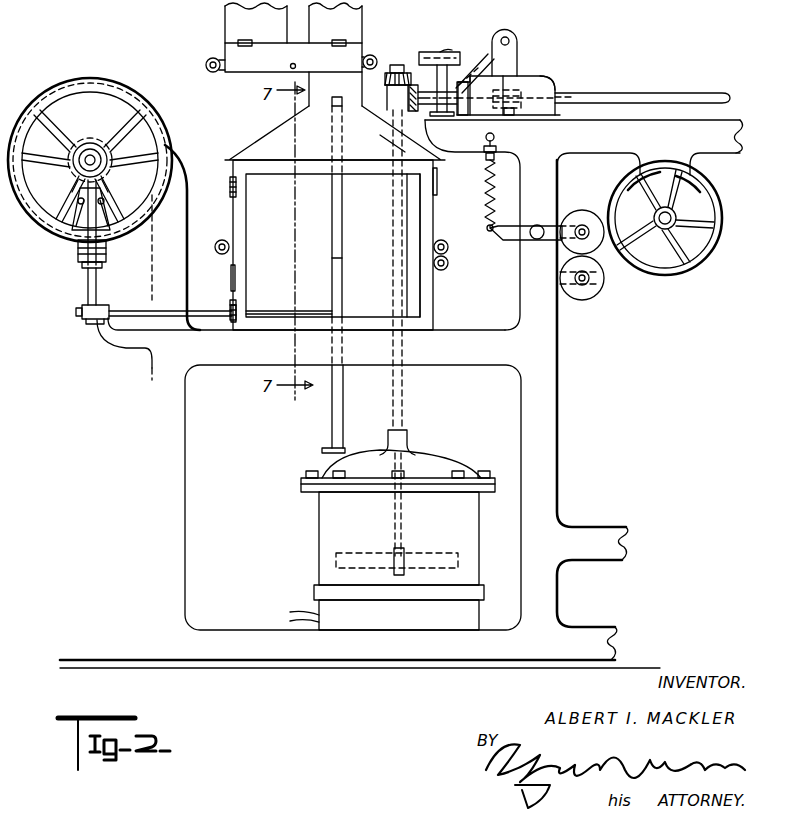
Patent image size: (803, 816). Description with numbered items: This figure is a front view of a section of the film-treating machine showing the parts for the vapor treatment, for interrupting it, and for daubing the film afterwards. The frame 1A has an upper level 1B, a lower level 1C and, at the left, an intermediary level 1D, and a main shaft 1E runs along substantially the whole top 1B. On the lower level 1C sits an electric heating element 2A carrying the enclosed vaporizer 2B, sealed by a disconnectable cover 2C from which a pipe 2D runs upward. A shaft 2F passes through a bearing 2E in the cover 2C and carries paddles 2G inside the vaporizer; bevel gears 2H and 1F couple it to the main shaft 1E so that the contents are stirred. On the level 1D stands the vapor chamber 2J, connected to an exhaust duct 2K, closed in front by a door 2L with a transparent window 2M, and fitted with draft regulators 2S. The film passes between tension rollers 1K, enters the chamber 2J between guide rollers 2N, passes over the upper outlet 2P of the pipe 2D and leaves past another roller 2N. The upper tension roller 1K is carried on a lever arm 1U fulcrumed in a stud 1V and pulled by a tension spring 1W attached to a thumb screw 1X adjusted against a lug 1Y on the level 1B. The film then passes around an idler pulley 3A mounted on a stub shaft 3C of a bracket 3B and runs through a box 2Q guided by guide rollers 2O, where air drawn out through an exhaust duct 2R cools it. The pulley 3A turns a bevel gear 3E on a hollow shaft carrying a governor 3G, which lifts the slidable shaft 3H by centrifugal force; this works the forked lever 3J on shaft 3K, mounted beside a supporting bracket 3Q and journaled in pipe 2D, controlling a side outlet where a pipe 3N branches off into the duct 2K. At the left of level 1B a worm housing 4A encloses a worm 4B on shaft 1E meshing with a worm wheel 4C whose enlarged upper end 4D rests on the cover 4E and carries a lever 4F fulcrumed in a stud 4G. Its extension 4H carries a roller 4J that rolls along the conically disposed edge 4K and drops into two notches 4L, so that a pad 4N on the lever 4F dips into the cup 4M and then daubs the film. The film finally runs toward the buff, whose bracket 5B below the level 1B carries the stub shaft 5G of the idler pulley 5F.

The frame 1A is at (406, 410).
The upper level 1B is at (584, 225).
The lower level 1C is at (360, 651).
The intermediary level 1D is at (306, 338).
The main shaft 1E is at (630, 96).
The bevel gear 1F is at (401, 133).
The tension rollers 1K is at (584, 208).
The lever arm 1U is at (512, 241).
The stud 1V is at (531, 227).
The tension spring 1W is at (495, 186).
The thumb screw 1X is at (494, 162).
The lug 1Y is at (500, 146).
The electric heating element 2A is at (387, 607).
The vaporizer 2B is at (399, 538).
The cover 2C is at (430, 458).
The pipe 2D is at (331, 418).
The bearing 2E is at (404, 416).
The shaft 2F is at (400, 289).
The paddles 2G is at (336, 557).
The bevel gear 2H is at (404, 62).
The vapor chamber 2J is at (335, 241).
The exhaust duct 2K is at (335, 23).
The door 2L is at (236, 214).
The transparent window 2M is at (333, 245).
The guide rollers 2N is at (218, 246).
The guide rollers 2O is at (210, 58).
The upper outlet 2P is at (342, 272).
The box 2Q is at (293, 73).
The exhaust duct 2R is at (256, 23).
The draft regulators 2S is at (231, 279).
The idler pulley 3A is at (46, 100).
The bracket 3B is at (179, 237).
The stub shaft 3C is at (86, 158).
The bevel gear 3E is at (74, 186).
The governor 3G is at (70, 226).
The shaft 3H is at (79, 286).
The lever 3J is at (84, 317).
The shaft 3K is at (138, 303).
The pipe 3N is at (344, 214).
The supporting bracket 3Q is at (113, 333).
The worm housing 4A is at (560, 114).
The worm 4B is at (520, 90).
The worm wheel 4C is at (557, 95).
The upper end of shaft 4D is at (514, 62).
The cover 4E is at (540, 74).
The lever 4F is at (448, 48).
The stud 4G is at (508, 36).
The extension 4H is at (485, 50).
The roller 4J is at (462, 56).
The conically disposed edge 4K is at (557, 80).
The notches 4L is at (468, 116).
The cup 4M is at (425, 50).
The pad 4N is at (433, 52).
The bracket 5B is at (664, 182).
The idler pulley 5F is at (690, 186).
The stub shaft 5G is at (673, 225).